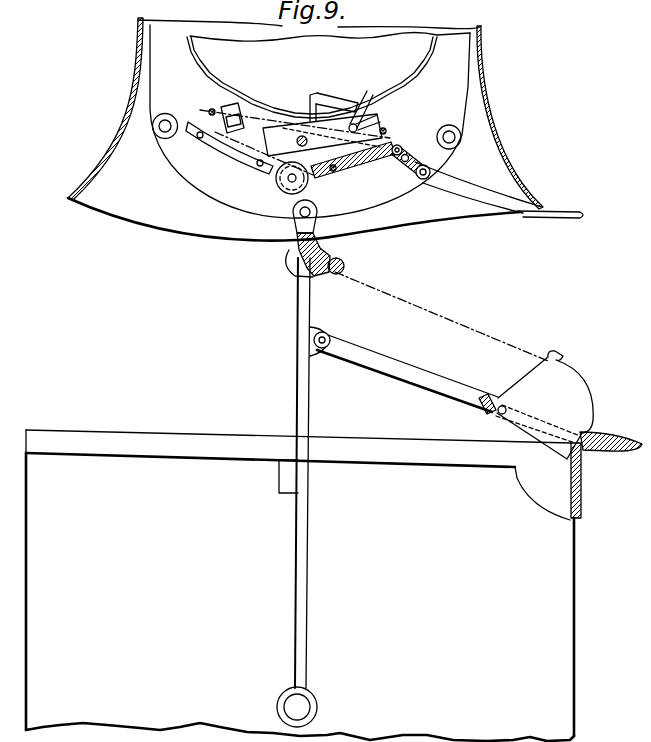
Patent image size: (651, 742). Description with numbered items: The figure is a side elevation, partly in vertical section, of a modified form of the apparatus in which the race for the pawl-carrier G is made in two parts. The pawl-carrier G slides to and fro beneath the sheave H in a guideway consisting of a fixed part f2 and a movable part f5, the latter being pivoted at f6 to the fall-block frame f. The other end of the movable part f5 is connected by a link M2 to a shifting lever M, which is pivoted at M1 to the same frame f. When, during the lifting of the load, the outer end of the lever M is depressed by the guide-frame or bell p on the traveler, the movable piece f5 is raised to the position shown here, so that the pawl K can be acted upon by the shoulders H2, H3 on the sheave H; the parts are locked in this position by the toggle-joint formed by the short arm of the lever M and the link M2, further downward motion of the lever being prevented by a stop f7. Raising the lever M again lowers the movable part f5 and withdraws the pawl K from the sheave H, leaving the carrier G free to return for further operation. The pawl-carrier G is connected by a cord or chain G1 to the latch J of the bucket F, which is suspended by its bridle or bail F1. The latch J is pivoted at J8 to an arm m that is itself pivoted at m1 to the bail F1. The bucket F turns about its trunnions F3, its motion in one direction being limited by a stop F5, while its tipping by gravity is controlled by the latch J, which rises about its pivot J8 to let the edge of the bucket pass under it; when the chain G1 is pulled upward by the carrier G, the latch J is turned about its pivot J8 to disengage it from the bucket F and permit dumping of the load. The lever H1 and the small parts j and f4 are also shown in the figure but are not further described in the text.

The guide-frame or bell p is at (305, 129).
The fall-block frame f is at (310, 121).
The sheave H is at (258, 71).
The bowl lever H1 is at (332, 101).
The shoulder on the sheave H2 is at (309, 94).
The shoulder on the sheave H3 is at (369, 96).
The pawl K is at (375, 114).
The catch j is at (236, 114).
The screws f4 is at (208, 112).
The stop f7 is at (428, 146).
The fixed part of the guideway or race f2 is at (218, 146).
The pawl-carrier G is at (322, 135).
The movable part of the guideway or race f5 is at (363, 167).
The pivot of movable race part f6 is at (333, 172).
The link M2 is at (415, 152).
The pivot of shifting lever M1 is at (436, 171).
The shifting lever M is at (531, 216).
The cord or chain G1 is at (330, 256).
The pivot of arm m1 is at (327, 336).
The arm m is at (429, 376).
The pivot of latch J8 is at (498, 414).
The latch J is at (569, 434).
The bucket F is at (300, 585).
The stop F5 is at (283, 481).
The bridle or bail F1 is at (304, 533).
The trunnions F3 is at (302, 704).